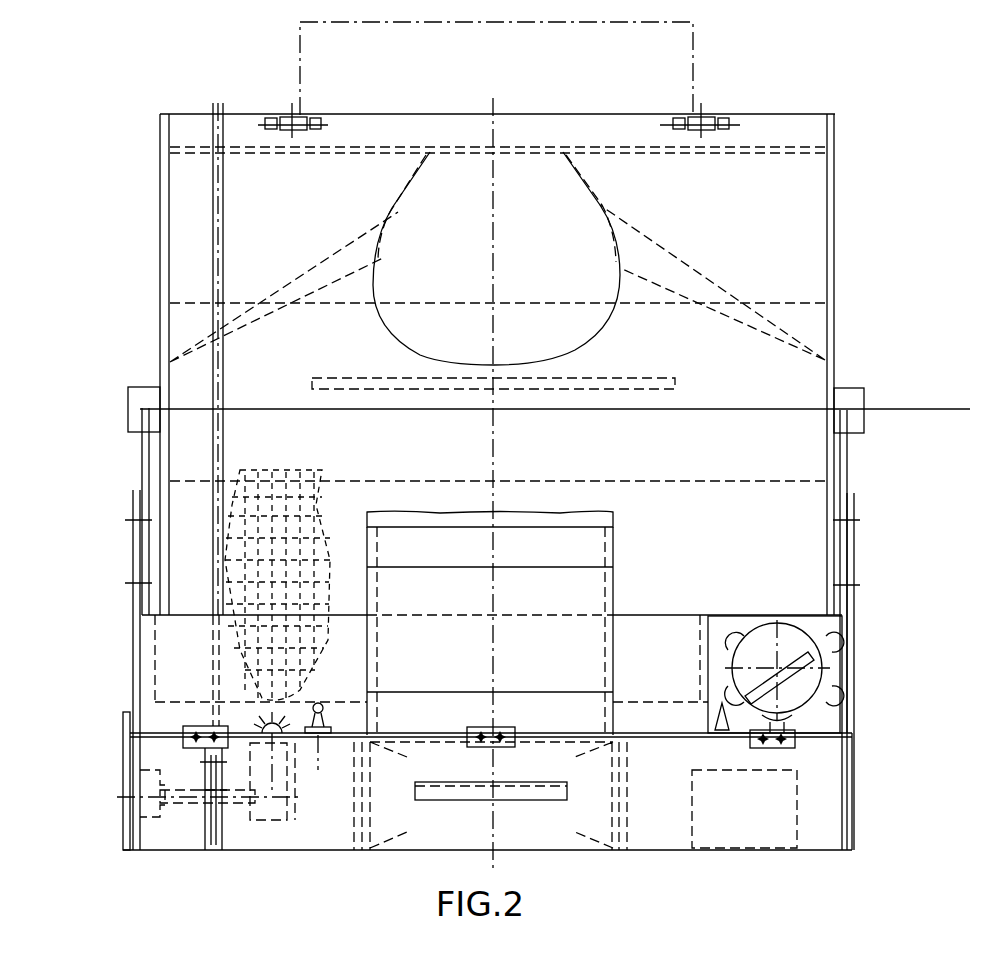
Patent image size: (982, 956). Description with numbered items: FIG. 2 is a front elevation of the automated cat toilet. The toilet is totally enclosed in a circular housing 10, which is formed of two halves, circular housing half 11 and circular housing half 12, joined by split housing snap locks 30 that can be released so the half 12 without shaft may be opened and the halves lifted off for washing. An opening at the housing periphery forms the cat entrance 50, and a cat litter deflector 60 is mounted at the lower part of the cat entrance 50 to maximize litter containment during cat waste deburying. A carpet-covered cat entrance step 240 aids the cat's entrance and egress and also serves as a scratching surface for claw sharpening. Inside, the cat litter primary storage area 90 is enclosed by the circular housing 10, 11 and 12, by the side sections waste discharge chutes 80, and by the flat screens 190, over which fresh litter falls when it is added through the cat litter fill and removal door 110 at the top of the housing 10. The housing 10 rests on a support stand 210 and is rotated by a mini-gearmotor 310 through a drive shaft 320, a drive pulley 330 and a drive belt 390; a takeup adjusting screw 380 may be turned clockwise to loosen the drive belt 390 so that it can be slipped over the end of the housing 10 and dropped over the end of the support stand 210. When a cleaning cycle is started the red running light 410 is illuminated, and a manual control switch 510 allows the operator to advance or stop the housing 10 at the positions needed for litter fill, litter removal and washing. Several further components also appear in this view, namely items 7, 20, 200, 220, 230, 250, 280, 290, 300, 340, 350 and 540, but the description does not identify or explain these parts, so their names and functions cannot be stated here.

The upper panel guide lines 7 is at (822, 154).
The circular housing 10 is at (348, 303).
The circular housing half 11 is at (836, 328).
The circular housing half 12 is at (828, 115).
The mounting bracket 20 is at (128, 424).
The split housing snap locks 30 is at (283, 116).
The cat entrance 50 is at (568, 356).
The cat litter deflector 60 is at (677, 384).
The side sections waste discharge chutes 80 is at (692, 153).
The cat litter primary storage area 90 is at (630, 706).
The cat litter fill and removal door 110 is at (694, 30).
The flat screens 190 is at (320, 505).
The collection bag 200 is at (288, 470).
The support stand 210 is at (134, 536).
The base 220 is at (828, 850).
The shelf 230 is at (182, 615).
The cat entrance step 240 is at (614, 552).
The drawer 250 is at (416, 826).
The storage compartment 280 is at (797, 800).
The control panel 290 is at (842, 730).
The tube 300 is at (142, 458).
The mini-gearmotor 310 is at (262, 820).
The drive shaft 320 is at (175, 800).
The drive pulley 330 is at (208, 850).
The rod 340 is at (143, 846).
The switch box 350 is at (183, 740).
The takeup adjusting screw 380 is at (134, 740).
The drive belt 390 is at (211, 112).
The red running light 410 is at (272, 780).
The manual control switch 510 is at (318, 745).
The table brace 540 is at (367, 662).